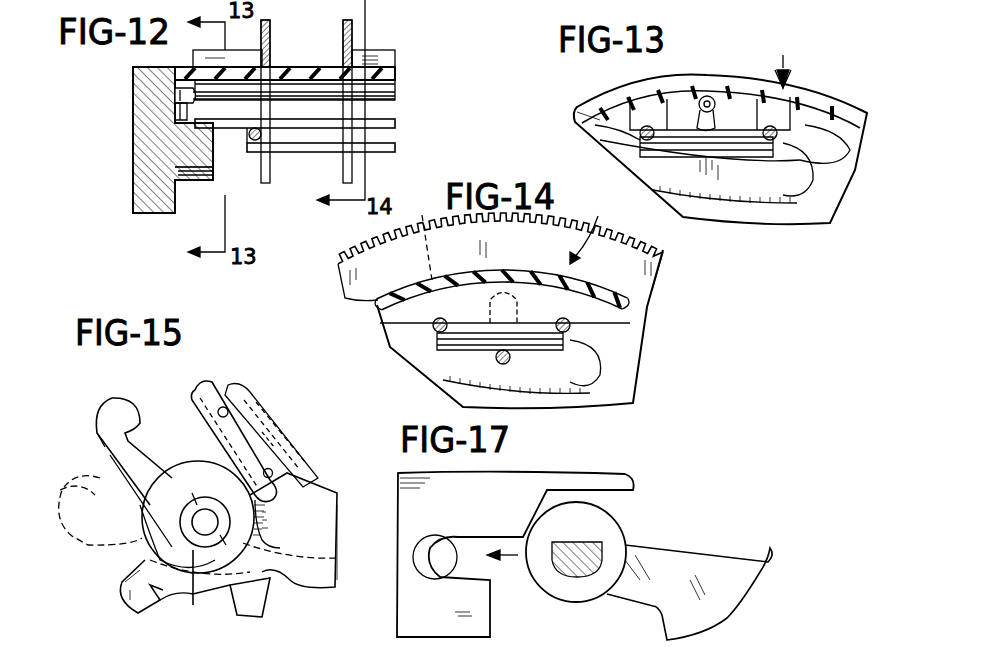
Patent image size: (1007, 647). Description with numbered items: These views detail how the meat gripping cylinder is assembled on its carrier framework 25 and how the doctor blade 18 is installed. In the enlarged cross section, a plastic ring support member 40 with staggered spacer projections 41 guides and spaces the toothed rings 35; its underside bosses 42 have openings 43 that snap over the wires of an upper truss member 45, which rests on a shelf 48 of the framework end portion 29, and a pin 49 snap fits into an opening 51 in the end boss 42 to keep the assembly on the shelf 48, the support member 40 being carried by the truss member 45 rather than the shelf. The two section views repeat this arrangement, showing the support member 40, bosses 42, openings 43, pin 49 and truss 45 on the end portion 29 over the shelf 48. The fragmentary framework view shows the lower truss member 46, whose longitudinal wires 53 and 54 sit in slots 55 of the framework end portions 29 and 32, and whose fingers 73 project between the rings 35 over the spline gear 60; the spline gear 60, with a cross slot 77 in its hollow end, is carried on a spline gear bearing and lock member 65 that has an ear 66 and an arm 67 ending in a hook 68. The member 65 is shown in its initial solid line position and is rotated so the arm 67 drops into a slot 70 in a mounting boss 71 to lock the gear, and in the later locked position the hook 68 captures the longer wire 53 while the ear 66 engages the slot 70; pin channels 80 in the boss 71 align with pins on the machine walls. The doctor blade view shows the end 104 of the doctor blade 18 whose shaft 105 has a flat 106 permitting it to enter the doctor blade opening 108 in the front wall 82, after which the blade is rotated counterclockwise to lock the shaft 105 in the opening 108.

In FIG. 17, the doctor blade 18 is at (695, 552).
In FIG. 15, the carrier framework 25 is at (348, 518).
In FIG. 12, the framework end portion 29 is at (146, 200).
In FIG. 13, the framework end portion 29 is at (840, 178).
In FIG. 14, the framework end portion 29 is at (625, 362).
In FIG. 15, the lower framework end portion 32 is at (330, 495).
In FIG. 12, the rings 35 is at (347, 43).
In FIG. 14, the rings 35 is at (346, 288).
In FIG. 12, the ring support member 40 is at (395, 72).
In FIG. 13, the ring support member 40 is at (600, 90).
In FIG. 14, the ring support member 40 is at (605, 283).
In FIG. 13, the spacer projections 41 is at (789, 52).
In FIG. 14, the spacer projections 41 is at (511, 234).
In FIG. 12, the bosses 42 is at (178, 108).
In FIG. 13, the bosses 42 is at (830, 125).
In FIG. 13, the openings 43 is at (592, 122).
In FIG. 14, the openings 43 is at (612, 323).
In FIG. 12, the upper truss member 45 is at (395, 123).
In FIG. 13, the upper truss member 45 is at (740, 158).
In FIG. 14, the upper truss member 45 is at (435, 358).
In FIG. 15, the lower truss member 46 is at (270, 432).
In FIG. 12, the shelf 48 is at (207, 150).
In FIG. 13, the shelf 48 is at (785, 185).
In FIG. 14, the shelf 48 is at (456, 370).
In FIG. 12, the pin 49 is at (178, 95).
In FIG. 13, the pin 49 is at (707, 96).
In FIG. 13, the opening 51 is at (722, 120).
In FIG. 14, the opening 51 is at (503, 308).
In FIG. 15, the longitudinal wire 53 is at (227, 408).
In FIG. 15, the longitudinal wire 54 is at (290, 446).
In FIG. 15, the slots 55 is at (238, 430).
In FIG. 15, the spline gear 60 is at (258, 520).
In FIG. 15, the spline gear bearing and lock member 65 is at (195, 588).
In FIG. 15, the ear 66 is at (274, 471).
In FIG. 15, the arm 67 is at (117, 460).
In FIG. 15, the hook 68 is at (120, 410).
In FIG. 15, the slot 70 is at (338, 558).
In FIG. 15, the mounting boss 71 is at (276, 578).
In FIG. 15, the fingers 73 is at (197, 382).
In FIG. 15, the cross slot 77 is at (190, 497).
In FIG. 15, the pin channels 80 is at (132, 588).
In FIG. 17, the front wall 82 is at (612, 478).
In FIG. 17, the end 104 is at (640, 585).
In FIG. 17, the shaft 105 is at (560, 566).
In FIG. 17, the flat 106 is at (580, 538).
In FIG. 17, the doctor blade opening 108 is at (425, 565).